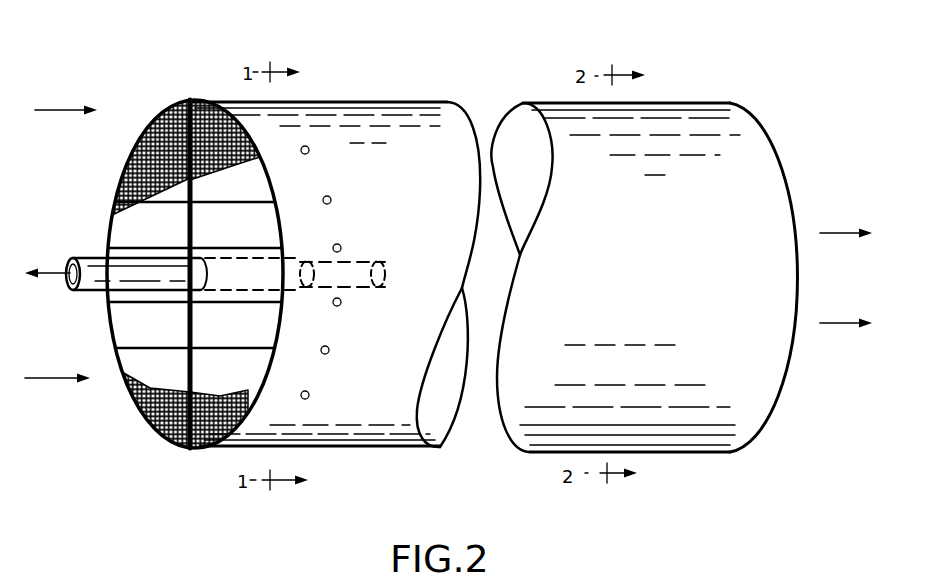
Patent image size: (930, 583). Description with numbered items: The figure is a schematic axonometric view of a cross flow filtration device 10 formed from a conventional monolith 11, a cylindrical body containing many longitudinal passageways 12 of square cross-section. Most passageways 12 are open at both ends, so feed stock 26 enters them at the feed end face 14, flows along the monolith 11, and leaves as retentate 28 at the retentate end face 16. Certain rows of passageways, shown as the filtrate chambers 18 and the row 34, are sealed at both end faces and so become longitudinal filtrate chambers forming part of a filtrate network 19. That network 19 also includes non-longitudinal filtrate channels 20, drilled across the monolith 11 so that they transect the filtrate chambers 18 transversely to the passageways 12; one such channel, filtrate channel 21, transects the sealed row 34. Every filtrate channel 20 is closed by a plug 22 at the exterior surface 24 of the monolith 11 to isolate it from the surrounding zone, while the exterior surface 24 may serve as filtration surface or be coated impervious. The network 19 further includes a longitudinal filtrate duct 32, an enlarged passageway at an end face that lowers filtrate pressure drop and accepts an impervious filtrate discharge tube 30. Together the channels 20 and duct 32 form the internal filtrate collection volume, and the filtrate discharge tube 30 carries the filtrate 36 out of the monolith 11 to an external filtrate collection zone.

The cross flow filtration device 10 is at (404, 40).
The monolith 11 is at (430, 84).
The passageways 12 is at (126, 172).
The feed end face 14 is at (120, 458).
The retentate end face 16 is at (773, 436).
The longitudinal filtrate chambers 18 is at (108, 246).
The filtrate network 19 is at (82, 325).
The filtrate channels 20 is at (308, 153).
The filtrate channel 21 is at (292, 97).
The plugs 22 is at (327, 354).
The exterior surface 24 is at (692, 99).
The feed stock 26 is at (55, 110).
The retentate 28 is at (835, 321).
The filtrate discharge tube 30 is at (83, 258).
The filtrate duct 32 is at (325, 262).
The sealed row of passageways 34 is at (192, 98).
The filtrate 36 is at (55, 275).